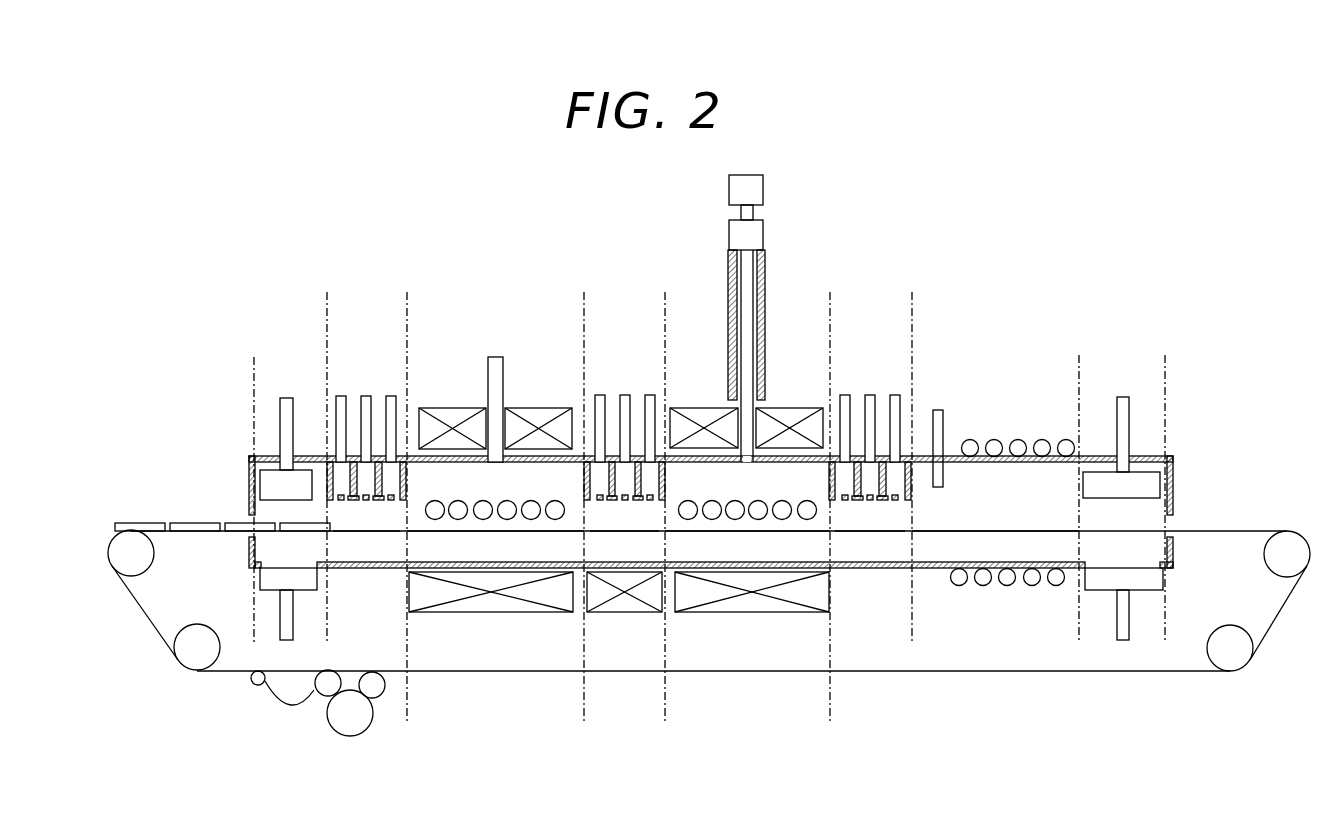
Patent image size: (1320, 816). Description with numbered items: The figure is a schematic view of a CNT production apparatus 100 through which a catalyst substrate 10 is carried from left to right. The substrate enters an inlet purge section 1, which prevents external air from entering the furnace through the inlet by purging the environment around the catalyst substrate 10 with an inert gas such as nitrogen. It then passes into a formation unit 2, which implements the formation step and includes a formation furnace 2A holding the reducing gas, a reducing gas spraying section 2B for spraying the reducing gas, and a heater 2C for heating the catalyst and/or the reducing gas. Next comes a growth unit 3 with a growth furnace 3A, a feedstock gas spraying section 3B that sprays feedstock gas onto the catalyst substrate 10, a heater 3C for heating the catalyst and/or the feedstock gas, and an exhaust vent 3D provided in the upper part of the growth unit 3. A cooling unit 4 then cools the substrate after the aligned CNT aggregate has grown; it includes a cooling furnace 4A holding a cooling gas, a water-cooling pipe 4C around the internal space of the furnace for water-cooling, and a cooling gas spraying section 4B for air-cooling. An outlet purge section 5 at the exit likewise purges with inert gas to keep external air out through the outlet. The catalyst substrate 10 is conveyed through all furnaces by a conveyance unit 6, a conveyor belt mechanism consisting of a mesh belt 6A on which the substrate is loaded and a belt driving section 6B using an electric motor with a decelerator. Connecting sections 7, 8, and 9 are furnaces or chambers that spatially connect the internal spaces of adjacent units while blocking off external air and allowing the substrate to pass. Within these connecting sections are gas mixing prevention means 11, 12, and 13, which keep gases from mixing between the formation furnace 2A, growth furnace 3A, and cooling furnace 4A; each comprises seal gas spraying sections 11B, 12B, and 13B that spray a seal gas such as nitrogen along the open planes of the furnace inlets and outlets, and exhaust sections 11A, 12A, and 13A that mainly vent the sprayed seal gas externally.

The production apparatus 100 is at (985, 232).
The inlet purge section 1 is at (254, 363).
The formation unit 2 is at (495, 528).
The formation furnace 2A is at (438, 550).
The reducing gas spraying section 2B is at (508, 523).
The heater 2C is at (487, 614).
The growth unit 3 is at (708, 470).
The growth furnace 3A is at (704, 550).
The feedstock gas spraying section 3B is at (761, 523).
The heater 3C is at (755, 614).
The exhaust vent 3D is at (746, 462).
The cooling unit 4 is at (995, 483).
The cooling furnace 4A is at (980, 482).
The cooling gas spraying section 4B is at (940, 410).
The water-cooling pipe 4C is at (1019, 439).
The outlet purge section 5 is at (1165, 359).
The conveyance unit 6 is at (709, 673).
The mesh belt 6A is at (138, 626).
The belt driving section 6B is at (302, 718).
The connecting section 7 is at (355, 556).
The connecting section 8 is at (636, 556).
The connecting section 9 is at (861, 556).
The catalyst substrate 10 is at (196, 521).
The gas mixing prevention means 11 is at (367, 490).
The exhaust section 11A is at (366, 396).
The seal gas spraying section 11B is at (391, 396).
The gas mixing prevention means 12 is at (624, 490).
The exhaust section 12A is at (625, 395).
The seal gas spraying section 12B is at (600, 395).
The gas mixing prevention means 13 is at (870, 451).
The exhaust section 13A is at (870, 395).
The seal gas spraying section 13B is at (845, 395).